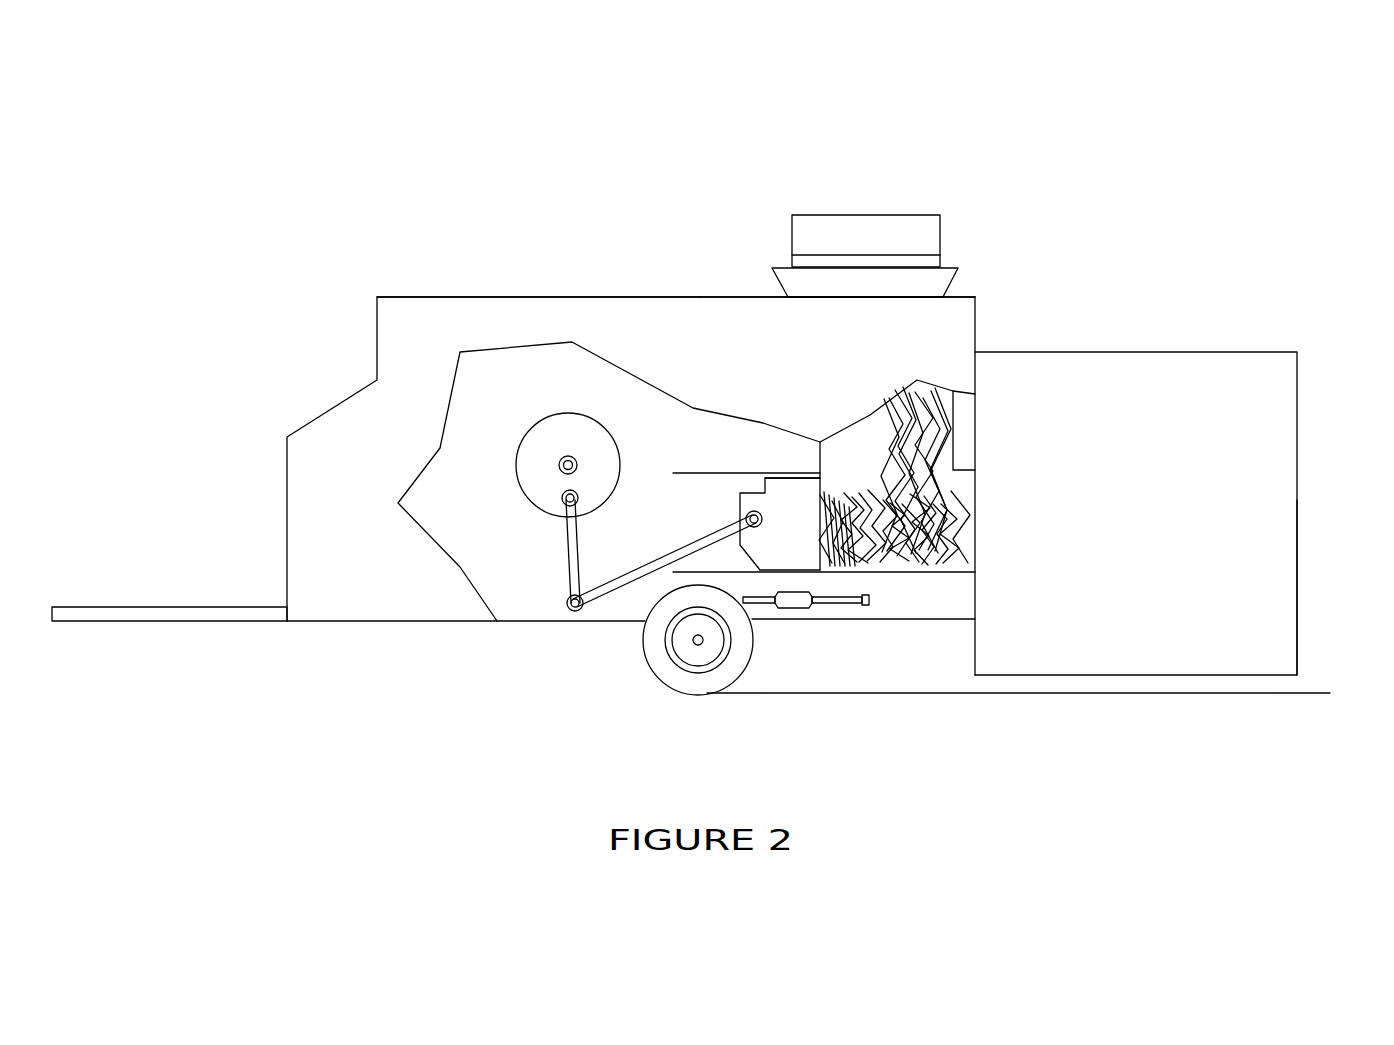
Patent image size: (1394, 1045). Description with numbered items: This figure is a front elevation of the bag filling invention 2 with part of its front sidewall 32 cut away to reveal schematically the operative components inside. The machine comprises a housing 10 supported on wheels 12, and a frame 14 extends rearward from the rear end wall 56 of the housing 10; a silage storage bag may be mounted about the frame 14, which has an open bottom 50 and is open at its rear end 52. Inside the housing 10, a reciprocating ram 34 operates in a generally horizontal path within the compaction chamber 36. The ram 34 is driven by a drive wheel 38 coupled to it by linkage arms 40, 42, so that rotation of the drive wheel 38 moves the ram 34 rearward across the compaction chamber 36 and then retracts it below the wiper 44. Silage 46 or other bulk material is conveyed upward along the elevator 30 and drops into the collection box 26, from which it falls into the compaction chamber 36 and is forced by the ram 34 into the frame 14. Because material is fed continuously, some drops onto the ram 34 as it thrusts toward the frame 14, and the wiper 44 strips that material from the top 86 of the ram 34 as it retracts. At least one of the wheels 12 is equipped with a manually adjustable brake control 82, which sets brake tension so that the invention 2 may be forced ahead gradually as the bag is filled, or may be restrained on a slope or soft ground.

The bag filling invention 2 is at (601, 486).
The housing 10 is at (538, 246).
The wheels 12 is at (726, 676).
The frame 14 is at (1142, 484).
The collection box 26 is at (914, 248).
The elevator 30 is at (912, 206).
The front sidewall 32 is at (348, 567).
The reciprocating ram 34 is at (756, 468).
The compaction chamber 36 is at (965, 476).
The drive wheel 38 is at (592, 378).
The linkage arm 40 is at (620, 546).
The linkage arm 42 is at (664, 628).
The wiper 44 is at (686, 471).
The silage 46 is at (964, 382).
The open bottom 50 is at (1018, 715).
The rear end 52 is at (1336, 587).
The rear end wall 56 is at (901, 274).
The brake control 82 is at (818, 642).
The top of ram 86 is at (833, 396).